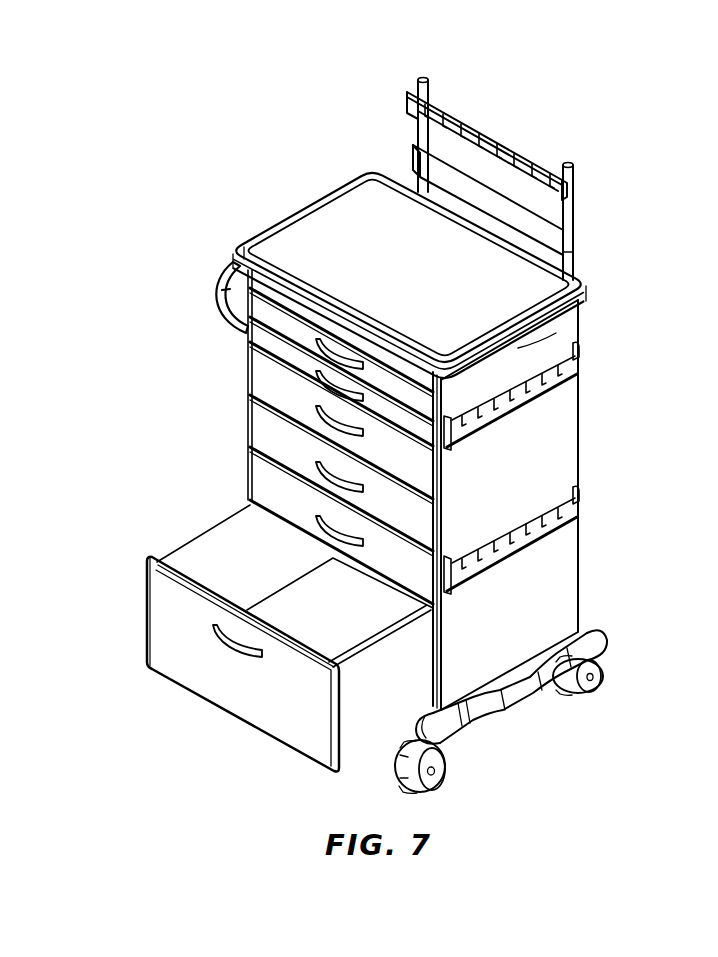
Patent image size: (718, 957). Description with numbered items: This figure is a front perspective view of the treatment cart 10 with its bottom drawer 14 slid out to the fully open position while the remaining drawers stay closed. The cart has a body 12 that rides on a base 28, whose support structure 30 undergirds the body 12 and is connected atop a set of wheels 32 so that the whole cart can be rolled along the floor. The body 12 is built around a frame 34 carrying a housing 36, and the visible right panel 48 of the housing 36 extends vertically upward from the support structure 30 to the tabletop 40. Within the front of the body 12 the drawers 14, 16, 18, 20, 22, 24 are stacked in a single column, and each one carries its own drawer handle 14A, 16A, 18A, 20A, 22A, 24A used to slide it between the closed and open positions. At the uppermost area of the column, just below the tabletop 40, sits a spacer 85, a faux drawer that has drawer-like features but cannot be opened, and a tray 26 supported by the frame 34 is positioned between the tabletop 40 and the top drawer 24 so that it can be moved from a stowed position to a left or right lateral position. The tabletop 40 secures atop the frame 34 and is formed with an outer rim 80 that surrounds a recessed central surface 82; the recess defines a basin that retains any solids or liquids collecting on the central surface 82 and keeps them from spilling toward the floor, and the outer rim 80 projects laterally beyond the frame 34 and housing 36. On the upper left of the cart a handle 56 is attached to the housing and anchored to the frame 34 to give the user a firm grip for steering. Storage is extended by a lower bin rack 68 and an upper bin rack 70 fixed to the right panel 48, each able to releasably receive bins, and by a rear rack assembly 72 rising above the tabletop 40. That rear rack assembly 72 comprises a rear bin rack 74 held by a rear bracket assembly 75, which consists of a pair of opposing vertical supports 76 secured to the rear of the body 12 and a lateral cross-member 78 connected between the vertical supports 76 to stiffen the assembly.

The treatment cart 10 is at (150, 96).
The body 12 is at (665, 396).
The bottom drawer 14 is at (162, 592).
The drawer handle 14A is at (232, 645).
The drawer 16 is at (265, 480).
The drawer handle 16A is at (310, 521).
The drawer 18 is at (265, 417).
The drawer handle 18A is at (310, 467).
The drawer 20 is at (272, 368).
The drawer handle 20A is at (310, 412).
The drawer 22 is at (265, 338).
The drawer handle 22A is at (362, 392).
The top drawer 24 is at (262, 304).
The drawer handle 24A is at (320, 341).
The tray 26 is at (560, 334).
The base 28 is at (626, 632).
The support structure 30 is at (509, 700).
The wheels 32 is at (603, 674).
The frame 34 is at (580, 438).
The housing 36 is at (580, 574).
The tabletop 40 is at (347, 174).
The right panel 48 is at (540, 468).
The handle 56 is at (216, 279).
The lower bin rack 68 is at (580, 506).
The upper bin rack 70 is at (580, 367).
The rear rack assembly 72 is at (598, 168).
The rear bin rack 74 is at (481, 134).
The rear bracket assembly 75 is at (580, 254).
The vertical supports 76 is at (420, 127).
The lateral cross-member 78 is at (493, 183).
The outer rim 80 is at (290, 210).
The central surface 82 is at (343, 226).
The spacer 85 is at (447, 448).